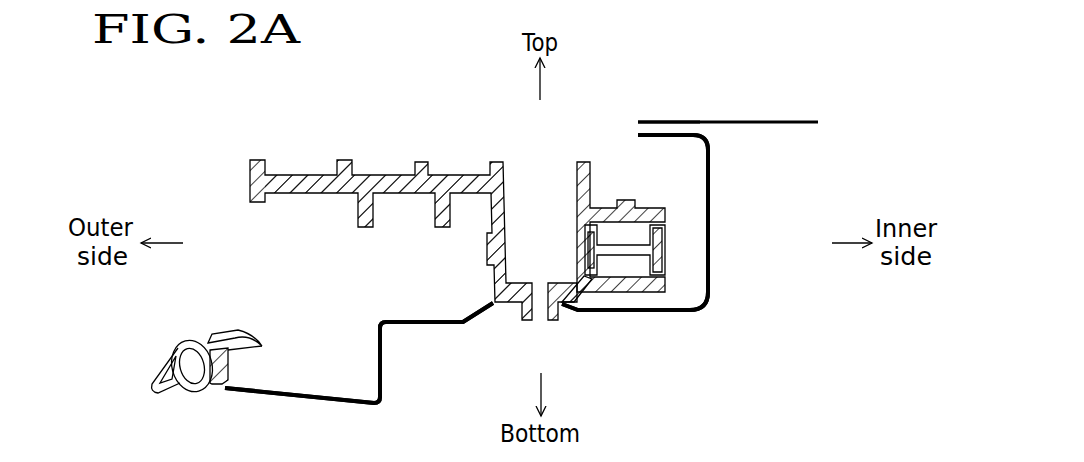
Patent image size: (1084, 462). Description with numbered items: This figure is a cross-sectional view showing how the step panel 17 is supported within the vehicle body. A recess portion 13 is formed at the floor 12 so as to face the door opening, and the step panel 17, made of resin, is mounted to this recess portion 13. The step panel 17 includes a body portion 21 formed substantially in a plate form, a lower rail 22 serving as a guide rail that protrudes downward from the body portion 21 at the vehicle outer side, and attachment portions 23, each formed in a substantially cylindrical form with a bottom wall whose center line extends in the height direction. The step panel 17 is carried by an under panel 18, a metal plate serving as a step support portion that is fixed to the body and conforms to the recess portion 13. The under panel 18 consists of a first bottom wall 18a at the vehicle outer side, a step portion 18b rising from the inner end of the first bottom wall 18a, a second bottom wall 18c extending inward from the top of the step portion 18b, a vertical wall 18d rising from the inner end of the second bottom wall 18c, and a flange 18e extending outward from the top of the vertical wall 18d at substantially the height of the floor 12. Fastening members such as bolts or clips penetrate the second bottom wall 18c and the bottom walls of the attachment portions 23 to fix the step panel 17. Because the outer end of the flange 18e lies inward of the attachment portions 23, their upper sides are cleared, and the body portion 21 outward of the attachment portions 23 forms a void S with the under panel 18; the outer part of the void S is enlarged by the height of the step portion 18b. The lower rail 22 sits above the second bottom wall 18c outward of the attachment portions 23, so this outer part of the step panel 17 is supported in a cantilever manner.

The floor 12 is at (763, 120).
The recess portion 13 is at (634, 124).
The step panel 17 is at (232, 186).
The under panel 18 is at (710, 184).
The first bottom wall 18a is at (294, 404).
The step portion 18b is at (384, 360).
The second bottom wall 18c is at (640, 313).
The vertical wall 18d is at (710, 228).
The flange 18e is at (670, 137).
The body portion 21 is at (283, 176).
The lower rail 22 is at (378, 229).
The attachment portion 23 is at (505, 190).
The void S is at (434, 284).